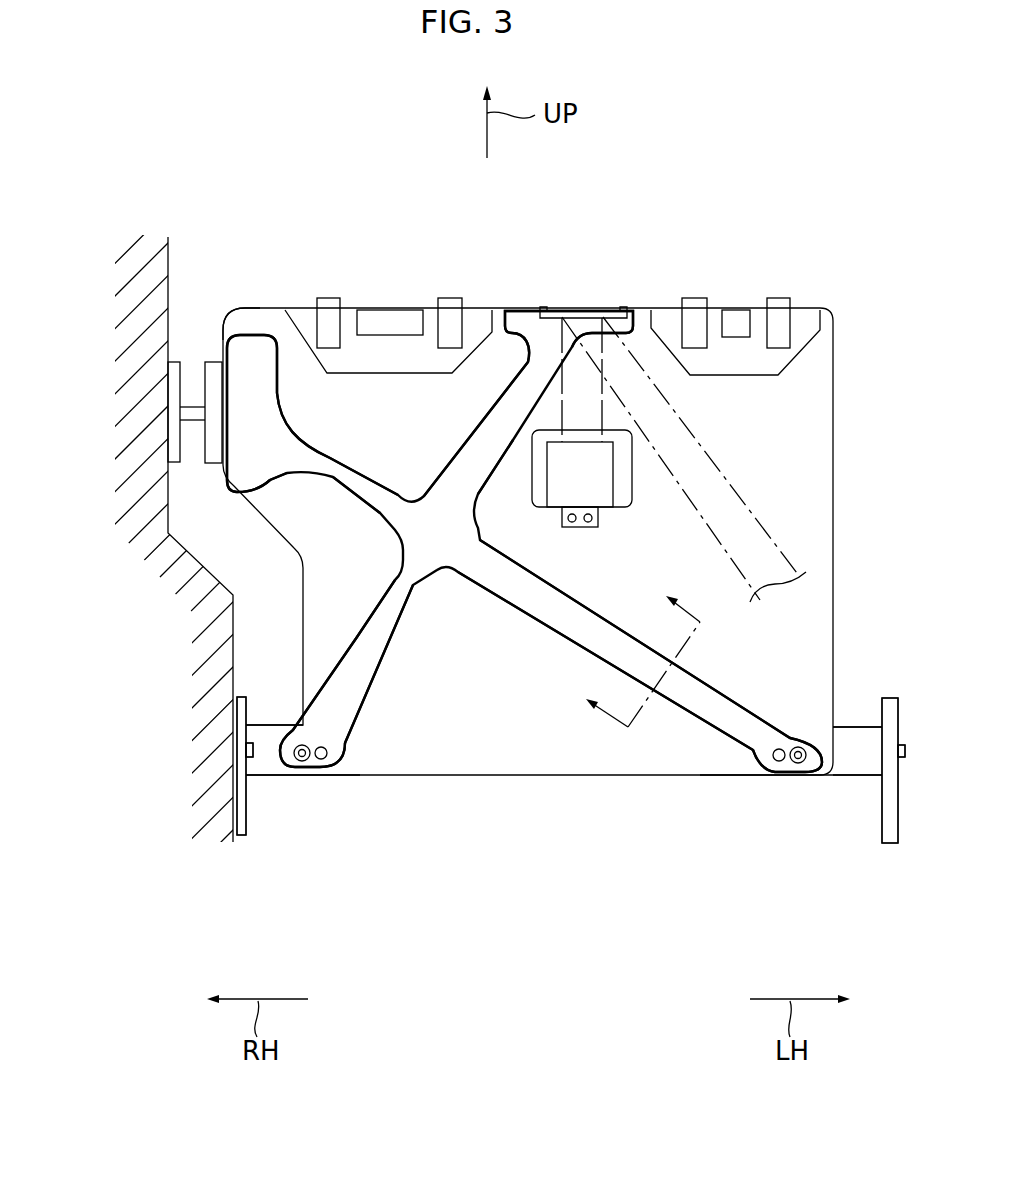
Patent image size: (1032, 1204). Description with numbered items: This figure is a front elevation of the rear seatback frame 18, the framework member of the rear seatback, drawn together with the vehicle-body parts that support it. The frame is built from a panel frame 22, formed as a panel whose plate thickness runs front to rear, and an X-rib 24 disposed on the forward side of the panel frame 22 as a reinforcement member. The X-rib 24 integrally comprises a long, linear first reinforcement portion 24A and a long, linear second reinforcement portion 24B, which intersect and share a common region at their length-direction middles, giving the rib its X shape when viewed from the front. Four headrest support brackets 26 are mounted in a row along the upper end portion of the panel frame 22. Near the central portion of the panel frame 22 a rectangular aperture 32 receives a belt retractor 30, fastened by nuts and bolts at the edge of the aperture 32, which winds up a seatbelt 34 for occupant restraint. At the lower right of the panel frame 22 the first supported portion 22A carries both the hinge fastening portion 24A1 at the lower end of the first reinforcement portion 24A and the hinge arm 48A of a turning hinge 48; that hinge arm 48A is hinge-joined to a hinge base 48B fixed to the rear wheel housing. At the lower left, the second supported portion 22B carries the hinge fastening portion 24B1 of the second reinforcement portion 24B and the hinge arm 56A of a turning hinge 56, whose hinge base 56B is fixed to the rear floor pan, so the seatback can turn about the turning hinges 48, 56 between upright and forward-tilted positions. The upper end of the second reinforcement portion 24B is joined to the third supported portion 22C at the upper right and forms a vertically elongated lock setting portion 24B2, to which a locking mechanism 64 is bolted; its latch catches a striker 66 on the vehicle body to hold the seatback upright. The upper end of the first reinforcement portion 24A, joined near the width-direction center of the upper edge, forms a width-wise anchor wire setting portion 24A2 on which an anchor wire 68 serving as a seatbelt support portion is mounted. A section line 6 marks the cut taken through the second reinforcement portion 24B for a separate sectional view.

The rear seatback frame 18 is at (680, 212).
The panel frame 22 is at (807, 420).
The first supported portion 22A is at (340, 775).
The second supported portion 22B is at (743, 767).
The third supported portion 22C is at (245, 322).
The X-rib 24 is at (422, 485).
The first reinforcement portion 24A is at (357, 637).
The hinge fastening portion 24A1 is at (330, 733).
The anchor wire setting portion 24A2 is at (522, 318).
The second reinforcement portion 24B is at (523, 607).
The hinge fastening portion 24B1 is at (790, 740).
The lock setting portion 24B2 is at (250, 357).
The headrest support brackets 26 is at (450, 298).
The belt retractor 30 is at (597, 490).
The aperture 32 is at (636, 470).
The seatbelt 34 is at (760, 527).
The turning hinge 48 is at (365, 912).
The hinge arm 48A is at (278, 777).
The hinge base 48B is at (245, 818).
The turning hinge 56 is at (895, 912).
The hinge arm 56A is at (848, 780).
The hinge base 56B is at (882, 820).
The locking mechanism 64 is at (205, 388).
The striker 66 is at (205, 417).
The anchor wire 68 is at (583, 307).
The section line 6- 6 is at (633, 650).